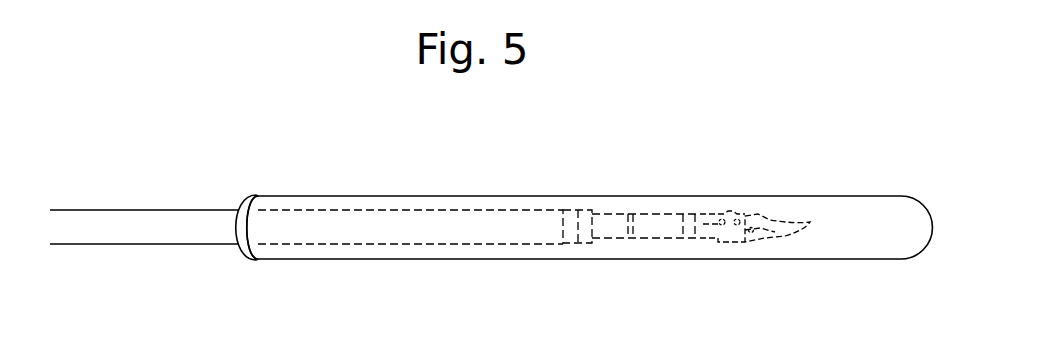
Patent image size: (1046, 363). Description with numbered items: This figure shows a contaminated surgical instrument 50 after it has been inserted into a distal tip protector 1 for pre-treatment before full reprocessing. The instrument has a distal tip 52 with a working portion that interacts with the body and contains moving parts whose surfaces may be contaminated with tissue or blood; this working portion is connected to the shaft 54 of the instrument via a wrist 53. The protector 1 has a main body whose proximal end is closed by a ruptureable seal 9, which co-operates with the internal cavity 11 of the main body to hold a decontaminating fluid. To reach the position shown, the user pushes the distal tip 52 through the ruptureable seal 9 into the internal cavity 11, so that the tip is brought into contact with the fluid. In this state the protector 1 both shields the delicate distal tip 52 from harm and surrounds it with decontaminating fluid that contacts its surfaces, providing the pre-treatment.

The protector 1 is at (457, 172).
The ruptureable seal 9 is at (244, 199).
The internal cavity 11 is at (338, 250).
The surgical instrument 50 is at (645, 213).
The distal tip 52 is at (766, 220).
The wrist 53 is at (735, 214).
The shaft 54 is at (178, 233).